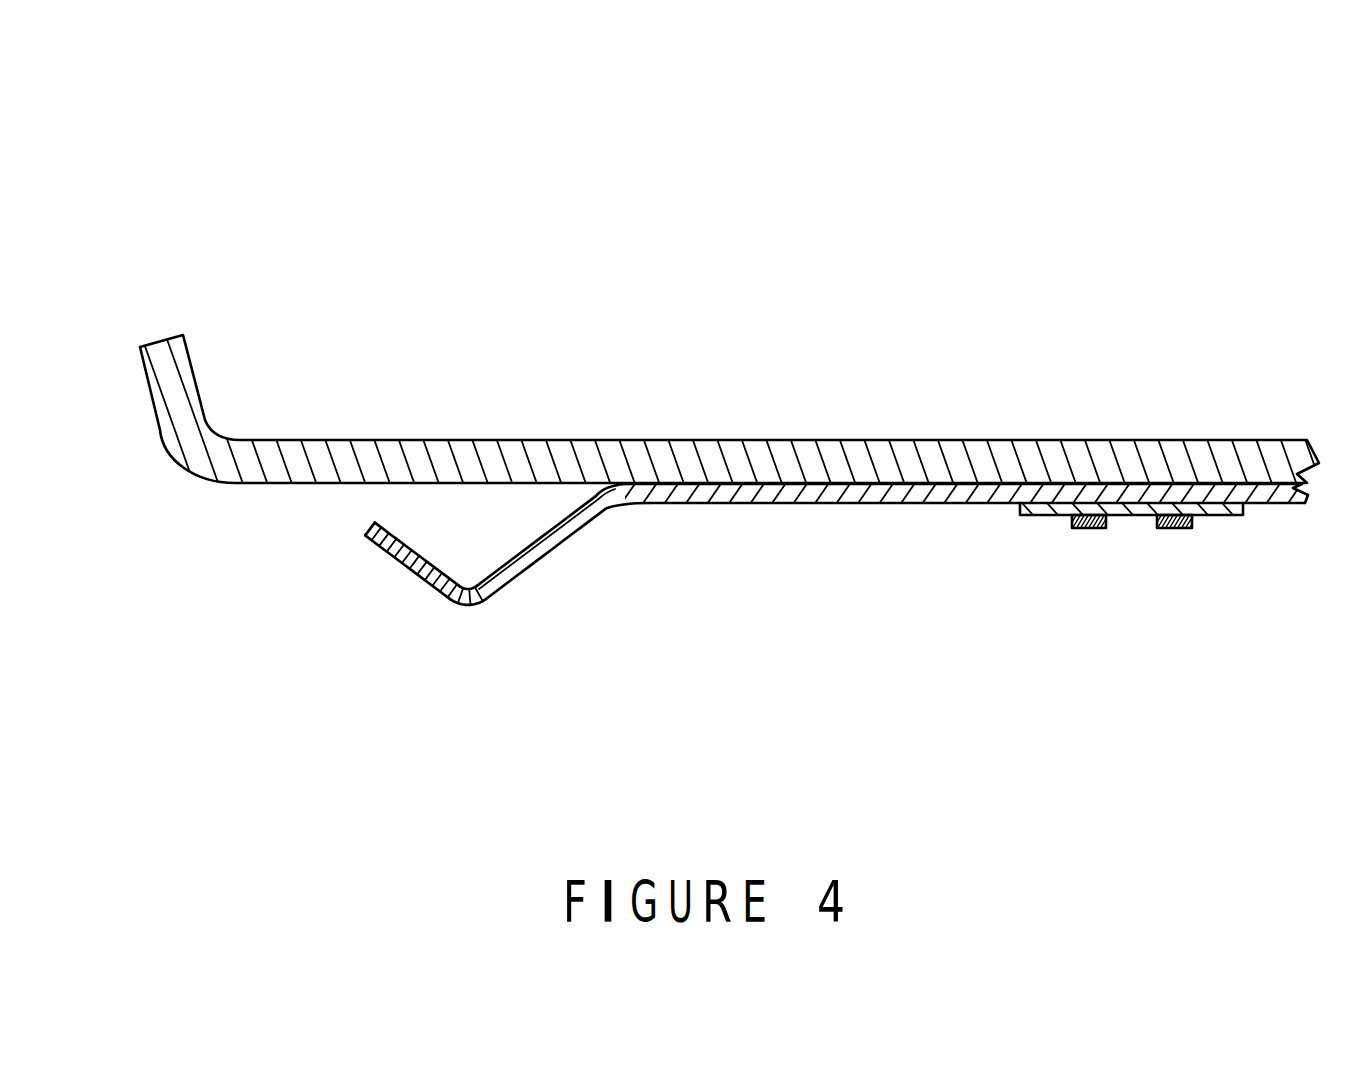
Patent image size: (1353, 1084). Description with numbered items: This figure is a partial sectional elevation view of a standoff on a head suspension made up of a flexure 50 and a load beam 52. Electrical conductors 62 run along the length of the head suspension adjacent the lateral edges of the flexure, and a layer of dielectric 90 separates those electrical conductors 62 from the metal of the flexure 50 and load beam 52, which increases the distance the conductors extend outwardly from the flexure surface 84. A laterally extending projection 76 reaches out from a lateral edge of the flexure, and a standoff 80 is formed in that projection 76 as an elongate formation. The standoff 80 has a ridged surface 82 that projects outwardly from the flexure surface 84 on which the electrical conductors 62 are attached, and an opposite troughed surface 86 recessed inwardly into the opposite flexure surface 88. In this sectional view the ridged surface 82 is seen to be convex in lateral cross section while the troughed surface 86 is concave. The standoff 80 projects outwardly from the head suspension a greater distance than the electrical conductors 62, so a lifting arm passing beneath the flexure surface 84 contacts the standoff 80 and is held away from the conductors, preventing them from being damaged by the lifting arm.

The flexure 50 is at (718, 502).
The load beam 52 is at (733, 439).
The electrical conductors 62 is at (1085, 528).
The laterally extending projection 76 is at (553, 552).
The standoff 80 is at (407, 567).
The ridged surface 82 is at (467, 608).
The flexure surface 84 is at (817, 505).
The troughed surface 86 is at (413, 531).
The opposite flexure surface 88 is at (557, 525).
The layer of dielectric 90 is at (1047, 517).